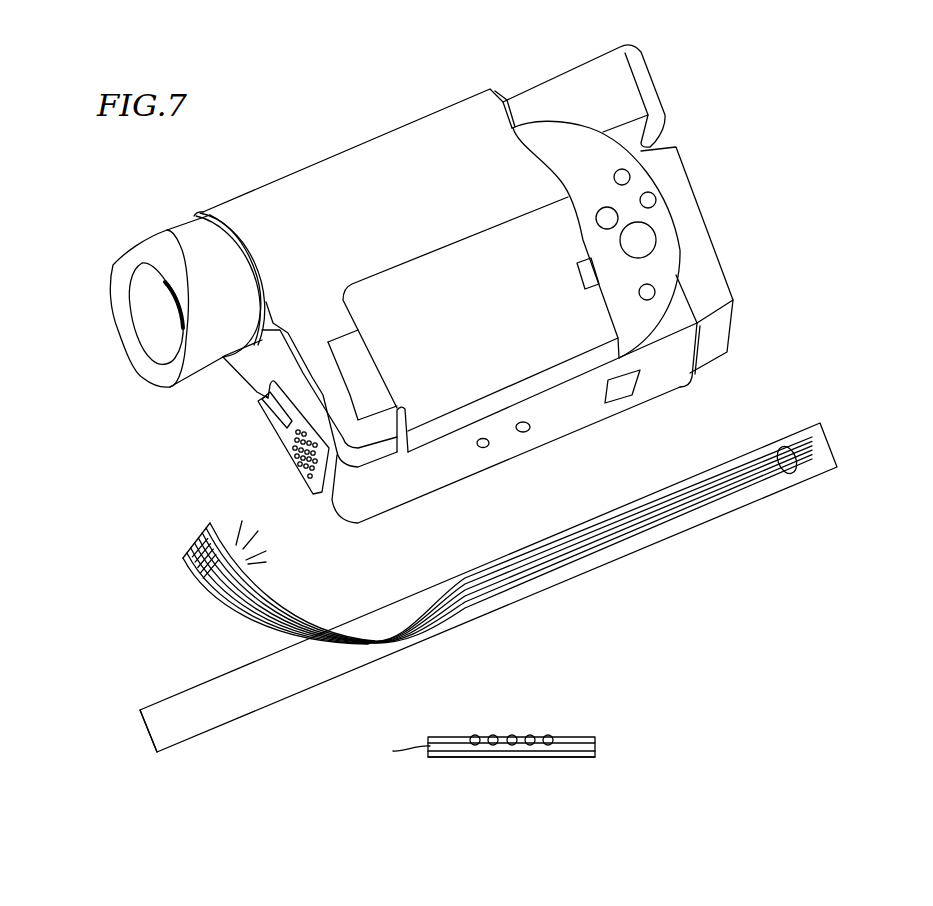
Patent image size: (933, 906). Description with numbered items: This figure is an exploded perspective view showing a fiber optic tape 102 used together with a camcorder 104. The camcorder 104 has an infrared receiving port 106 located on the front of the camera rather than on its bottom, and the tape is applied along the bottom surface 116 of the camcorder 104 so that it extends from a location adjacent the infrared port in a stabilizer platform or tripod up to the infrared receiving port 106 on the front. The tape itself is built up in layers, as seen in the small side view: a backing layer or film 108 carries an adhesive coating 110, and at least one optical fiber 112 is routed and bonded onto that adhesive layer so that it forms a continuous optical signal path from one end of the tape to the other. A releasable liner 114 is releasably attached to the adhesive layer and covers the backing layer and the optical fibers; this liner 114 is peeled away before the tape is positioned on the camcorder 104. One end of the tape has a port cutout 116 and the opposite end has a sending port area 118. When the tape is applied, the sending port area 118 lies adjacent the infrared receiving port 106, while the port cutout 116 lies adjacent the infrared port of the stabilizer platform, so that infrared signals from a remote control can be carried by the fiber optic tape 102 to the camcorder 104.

The fiber optic tape 102 is at (823, 446).
The camcorder 104 is at (391, 130).
The infrared receiving port 106 is at (268, 398).
The backing layer or film 108 is at (583, 757).
The adhesive coating 110 is at (240, 581).
The optical fiber 112 is at (660, 517).
The releasable liner 114 is at (173, 715).
The bottom surface / port cutout 116 is at (662, 372).
The sending port area 118 is at (188, 563).